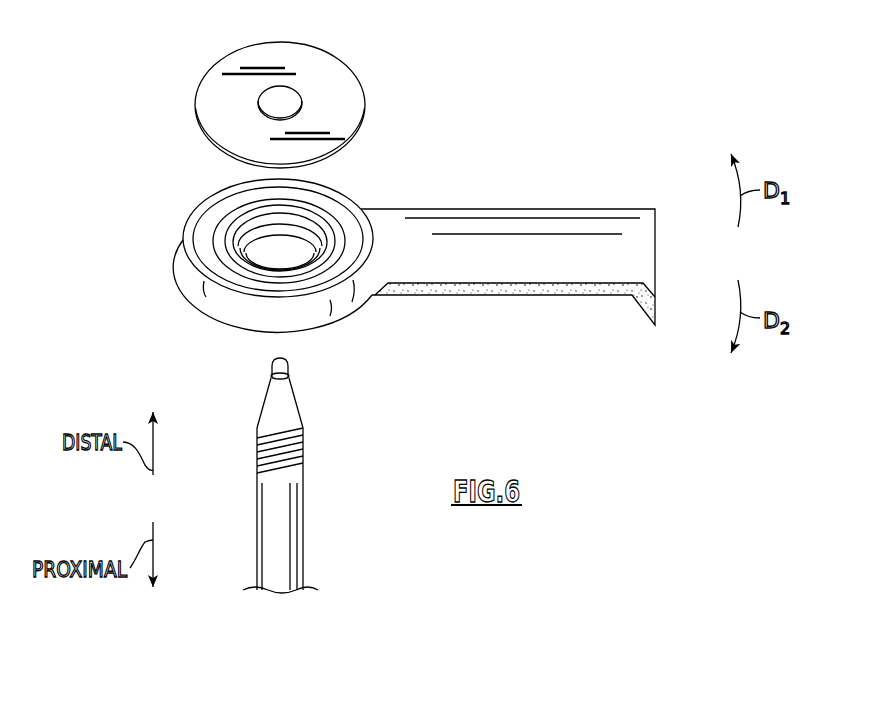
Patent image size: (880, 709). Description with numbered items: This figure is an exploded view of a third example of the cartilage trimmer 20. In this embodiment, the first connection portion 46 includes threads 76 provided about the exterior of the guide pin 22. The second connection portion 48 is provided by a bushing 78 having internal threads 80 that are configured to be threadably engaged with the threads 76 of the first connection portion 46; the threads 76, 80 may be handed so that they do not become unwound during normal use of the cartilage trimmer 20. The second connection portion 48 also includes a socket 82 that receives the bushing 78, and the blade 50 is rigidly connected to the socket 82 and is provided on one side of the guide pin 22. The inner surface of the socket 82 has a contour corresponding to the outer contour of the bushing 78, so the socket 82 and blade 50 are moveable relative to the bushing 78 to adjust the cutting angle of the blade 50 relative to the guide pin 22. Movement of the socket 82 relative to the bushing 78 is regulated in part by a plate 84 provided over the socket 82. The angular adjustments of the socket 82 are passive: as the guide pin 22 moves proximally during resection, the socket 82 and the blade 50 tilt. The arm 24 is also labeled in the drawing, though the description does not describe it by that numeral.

The cartilage trimmer 20 is at (122, 214).
The guide pin 22 is at (296, 522).
The arm 24 is at (553, 305).
The first connection portion 46 is at (345, 450).
The second connection portion 48 is at (330, 212).
The blade 50 is at (520, 240).
The threads 76 is at (258, 455).
The bushing 78 is at (235, 275).
The internal threads 80 is at (265, 228).
The socket 82 is at (230, 320).
The plate 84 is at (215, 97).